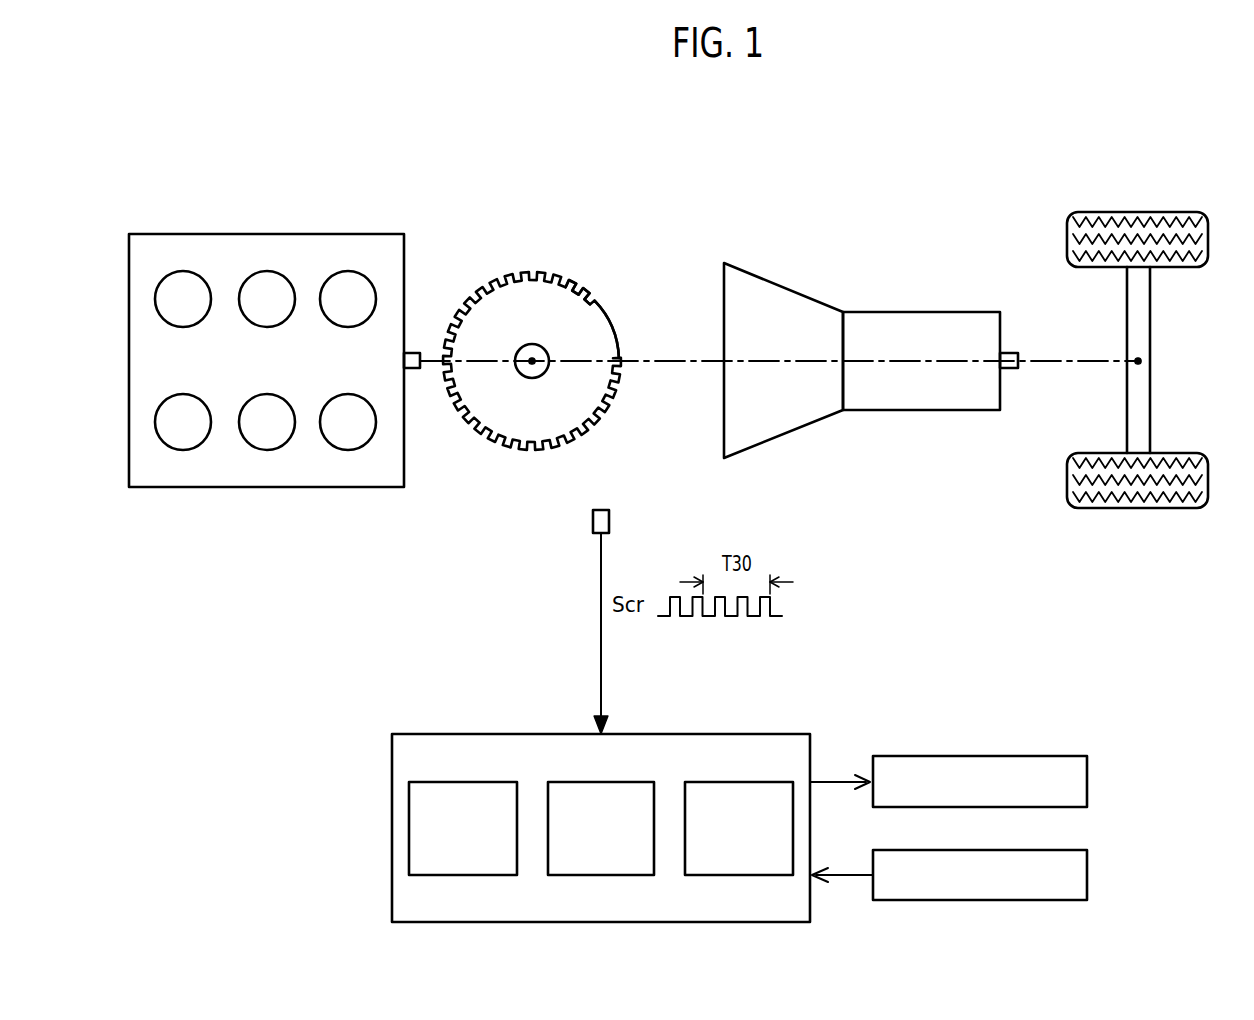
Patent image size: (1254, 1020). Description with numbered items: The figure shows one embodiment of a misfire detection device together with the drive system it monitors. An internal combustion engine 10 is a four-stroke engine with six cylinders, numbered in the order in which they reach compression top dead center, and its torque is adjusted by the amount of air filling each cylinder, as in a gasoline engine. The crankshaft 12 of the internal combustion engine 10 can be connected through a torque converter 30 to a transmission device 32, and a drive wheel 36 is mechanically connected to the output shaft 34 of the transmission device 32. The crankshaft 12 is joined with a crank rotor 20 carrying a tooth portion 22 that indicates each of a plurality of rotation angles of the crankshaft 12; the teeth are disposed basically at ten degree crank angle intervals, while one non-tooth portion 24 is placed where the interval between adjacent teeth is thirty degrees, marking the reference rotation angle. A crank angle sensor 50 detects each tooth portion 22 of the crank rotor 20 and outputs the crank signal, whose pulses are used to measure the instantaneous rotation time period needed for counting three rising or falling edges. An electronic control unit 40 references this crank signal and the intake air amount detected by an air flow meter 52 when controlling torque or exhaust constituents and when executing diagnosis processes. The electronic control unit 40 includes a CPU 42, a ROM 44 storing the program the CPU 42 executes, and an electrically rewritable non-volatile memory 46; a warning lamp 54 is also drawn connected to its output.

The internal combustion engine 10 is at (358, 224).
The crankshaft 12 is at (534, 344).
The crank rotor 20 is at (584, 257).
The tooth portion 22 is at (602, 300).
The non-tooth portion 24 is at (611, 331).
The torque converter 30 is at (781, 285).
The transmission device 32 is at (907, 310).
The output shaft 34 is at (1011, 352).
The drive wheel 36 is at (1138, 212).
The electronic control unit 40 is at (729, 734).
The CPU 42 is at (458, 781).
The ROM 44 is at (596, 781).
The non-volatile memory 46 is at (735, 781).
The crank angle sensor 50 is at (611, 519).
The air flow meter 52 is at (1088, 873).
The warning lamp 54 is at (1088, 780).